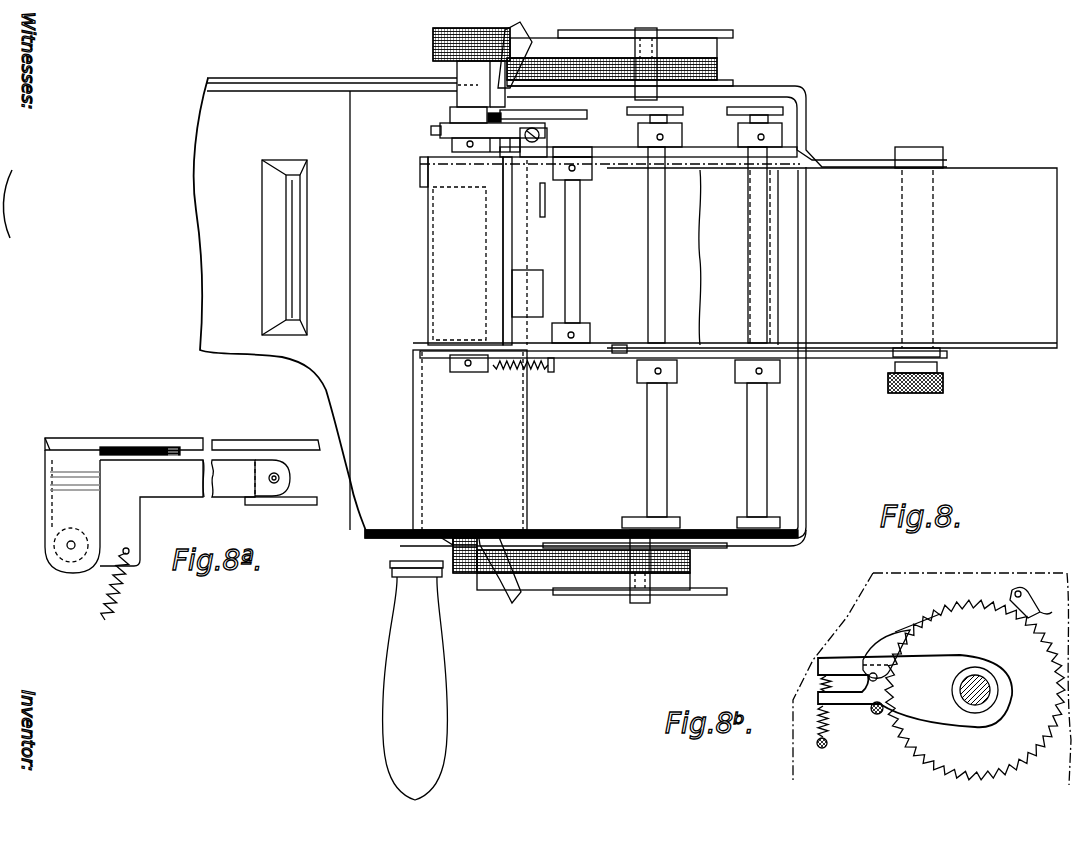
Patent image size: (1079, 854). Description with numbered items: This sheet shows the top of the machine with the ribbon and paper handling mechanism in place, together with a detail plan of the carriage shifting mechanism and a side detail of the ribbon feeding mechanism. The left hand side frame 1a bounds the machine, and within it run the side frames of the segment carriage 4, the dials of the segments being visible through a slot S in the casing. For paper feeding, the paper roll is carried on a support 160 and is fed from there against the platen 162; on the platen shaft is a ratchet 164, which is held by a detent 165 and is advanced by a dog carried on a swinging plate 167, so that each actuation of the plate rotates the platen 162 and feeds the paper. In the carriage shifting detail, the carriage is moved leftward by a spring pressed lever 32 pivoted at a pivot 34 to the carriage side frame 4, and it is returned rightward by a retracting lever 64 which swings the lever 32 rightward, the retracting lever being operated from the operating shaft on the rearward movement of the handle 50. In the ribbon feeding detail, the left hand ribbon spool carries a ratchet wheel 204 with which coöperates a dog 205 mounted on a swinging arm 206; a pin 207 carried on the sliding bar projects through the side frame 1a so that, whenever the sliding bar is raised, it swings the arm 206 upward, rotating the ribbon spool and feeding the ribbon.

In FIG. 8, the slot S is at (305, 226).
In FIG. 8, the detent 165 is at (460, 123).
In FIG. 8, the ratchet 164 is at (431, 130).
In FIG. 8, the swinging plate 167 is at (452, 150).
In FIG. 8, the platen 162 is at (440, 218).
In FIG. 8, the support 160 is at (830, 360).
In FIG. 8, the handle 50 is at (440, 674).
In FIG. 8A, the retracting lever 64 is at (125, 448).
In FIG. 8A, the left hand side frame 1a is at (160, 432).
In FIG. 8A, the spring pressed lever 32 is at (212, 489).
In FIG. 8A, the side frames of the segment carriage 4 is at (278, 497).
In FIG. 8A, the pivot 34 is at (280, 478).
In FIG. 8B, the ratchet wheel 204 is at (947, 618).
In FIG. 8B, the dog 205 is at (869, 655).
In FIG. 8B, the swinging arm 206 is at (868, 693).
In FIG. 8B, the pin 207 is at (877, 716).